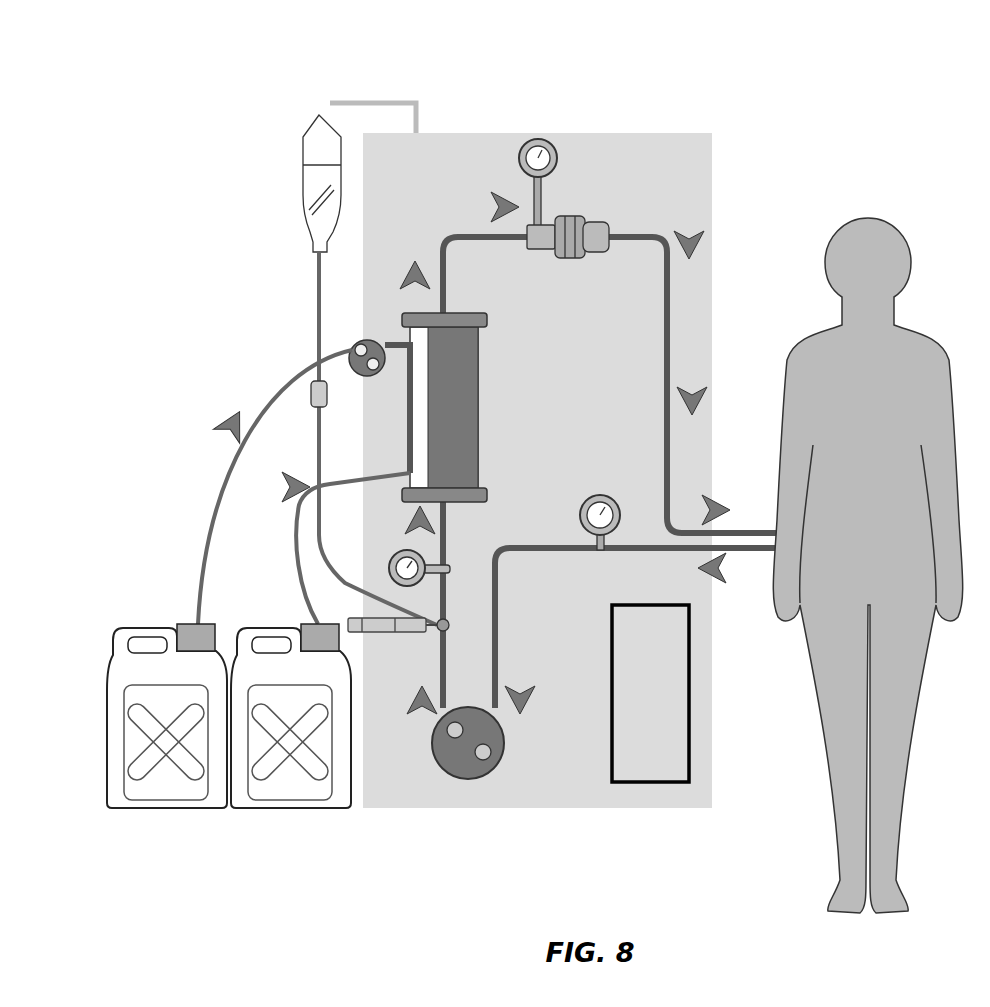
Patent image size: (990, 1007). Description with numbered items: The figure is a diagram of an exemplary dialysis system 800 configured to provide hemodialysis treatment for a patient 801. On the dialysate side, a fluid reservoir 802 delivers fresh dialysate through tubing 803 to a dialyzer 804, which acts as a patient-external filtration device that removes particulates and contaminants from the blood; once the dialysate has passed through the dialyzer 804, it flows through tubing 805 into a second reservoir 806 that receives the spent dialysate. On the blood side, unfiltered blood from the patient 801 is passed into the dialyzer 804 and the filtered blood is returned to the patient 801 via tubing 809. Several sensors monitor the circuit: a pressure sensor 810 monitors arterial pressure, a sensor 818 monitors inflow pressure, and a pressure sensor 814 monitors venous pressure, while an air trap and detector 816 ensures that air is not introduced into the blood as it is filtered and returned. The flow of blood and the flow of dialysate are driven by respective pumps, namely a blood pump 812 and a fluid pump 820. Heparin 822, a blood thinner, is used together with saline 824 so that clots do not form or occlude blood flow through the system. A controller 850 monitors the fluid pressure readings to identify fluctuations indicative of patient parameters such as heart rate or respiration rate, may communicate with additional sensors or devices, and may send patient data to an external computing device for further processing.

The dialysis system 800 is at (255, 98).
The patient 801 is at (731, 813).
The fluid reservoir 802 is at (167, 716).
The tubing 803 is at (222, 410).
The dialyzer 804 is at (464, 407).
The tubing 805 is at (280, 485).
The reservoir 806 is at (291, 716).
The tubing 809 is at (707, 232).
The pressure sensor 810 is at (600, 560).
The blood pump 812 is at (465, 783).
The pressure sensor 814 is at (563, 147).
The air trap and detector 816 is at (583, 207).
The sensor 818 is at (385, 567).
The fluid pump 820 is at (352, 342).
The heparin 822 is at (437, 633).
The saline 824 is at (292, 186).
The controller 850 is at (680, 785).